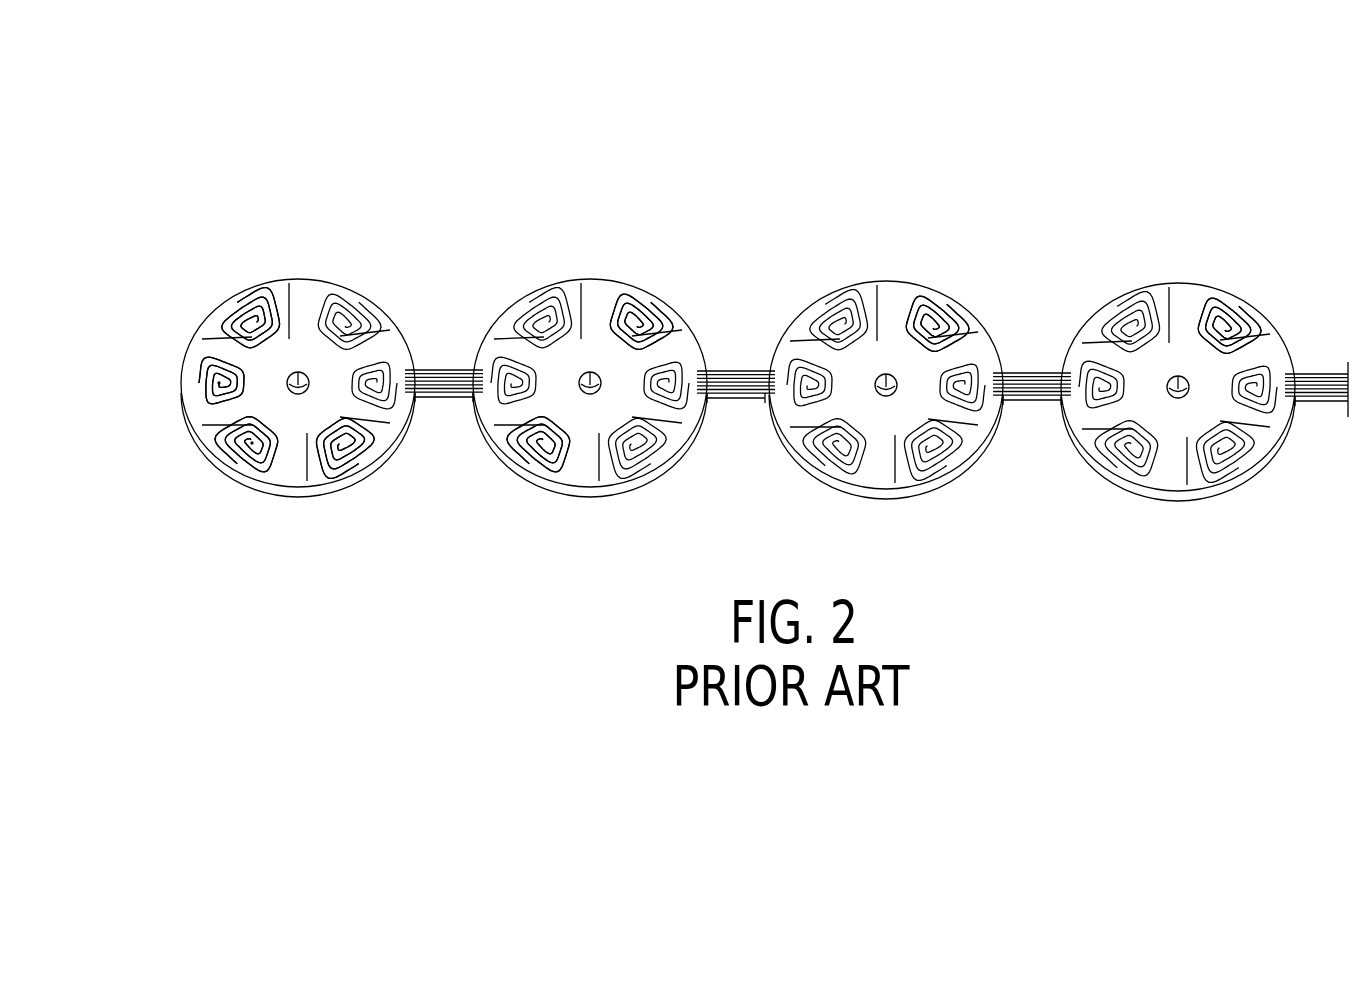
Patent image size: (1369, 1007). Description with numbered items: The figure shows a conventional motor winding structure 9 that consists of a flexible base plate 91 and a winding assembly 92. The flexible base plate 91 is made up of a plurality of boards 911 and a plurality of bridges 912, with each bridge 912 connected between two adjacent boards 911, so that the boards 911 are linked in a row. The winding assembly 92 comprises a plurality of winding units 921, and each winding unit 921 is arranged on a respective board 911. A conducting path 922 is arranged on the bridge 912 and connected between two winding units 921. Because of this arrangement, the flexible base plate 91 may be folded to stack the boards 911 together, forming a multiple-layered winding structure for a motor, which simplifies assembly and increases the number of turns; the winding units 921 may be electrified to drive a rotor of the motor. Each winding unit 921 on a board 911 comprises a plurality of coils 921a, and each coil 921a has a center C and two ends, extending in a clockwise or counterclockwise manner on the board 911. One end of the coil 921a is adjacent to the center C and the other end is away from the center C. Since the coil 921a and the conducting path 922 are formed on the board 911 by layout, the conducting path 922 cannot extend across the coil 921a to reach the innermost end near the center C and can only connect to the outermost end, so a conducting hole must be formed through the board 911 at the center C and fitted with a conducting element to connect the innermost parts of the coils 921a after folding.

The motor winding structure 9 is at (878, 95).
The flexible base plate 91 is at (257, 248).
The board 911 is at (229, 302).
The bridge 912 is at (445, 369).
The winding assembly 92 is at (522, 538).
The winding unit 921 is at (355, 440).
The coil 921a is at (190, 412).
The conducting path 922 is at (442, 393).
The center C is at (217, 385).